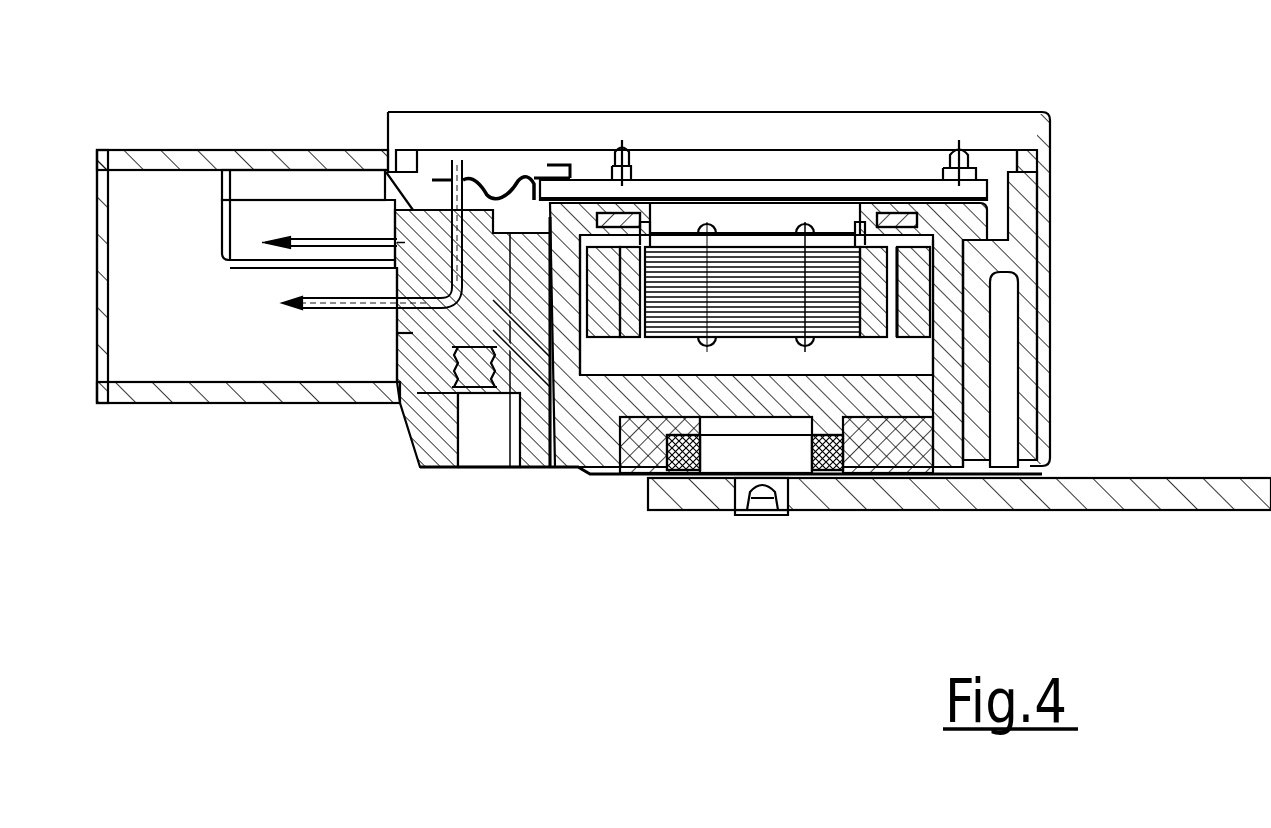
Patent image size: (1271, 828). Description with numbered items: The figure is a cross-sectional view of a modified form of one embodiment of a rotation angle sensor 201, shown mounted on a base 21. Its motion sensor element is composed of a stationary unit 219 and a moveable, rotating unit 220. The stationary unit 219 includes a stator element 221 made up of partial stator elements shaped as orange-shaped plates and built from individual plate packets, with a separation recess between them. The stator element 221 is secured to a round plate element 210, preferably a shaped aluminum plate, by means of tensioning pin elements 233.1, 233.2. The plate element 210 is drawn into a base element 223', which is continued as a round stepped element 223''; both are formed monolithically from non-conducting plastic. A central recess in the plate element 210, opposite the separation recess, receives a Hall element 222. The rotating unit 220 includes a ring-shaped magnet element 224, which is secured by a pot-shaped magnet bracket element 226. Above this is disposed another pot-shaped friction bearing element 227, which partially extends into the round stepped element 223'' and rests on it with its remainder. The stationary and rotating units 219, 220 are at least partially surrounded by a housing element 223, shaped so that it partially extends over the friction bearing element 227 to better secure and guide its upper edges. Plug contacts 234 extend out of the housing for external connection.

The cap / housing cover 201 is at (1066, 126).
The base plate 21 is at (1066, 498).
The plate element 210 is at (745, 240).
The stationary unit 219 is at (830, 193).
The rotating unit 220 is at (934, 478).
The stator element 221 is at (778, 262).
The Hall element 222 is at (683, 215).
The housing element 223 is at (1038, 308).
The base element 223' is at (1044, 200).
The stepped element 223'' is at (1048, 353).
The ring-shaped magnet element 224 is at (630, 474).
The magnet bracket element 226 is at (520, 392).
The friction bearing element 227 is at (560, 350).
The tensioning pin element 233.1 is at (712, 350).
The tensioning pin element 233.2 is at (815, 347).
The plug contacts 234 is at (287, 246).